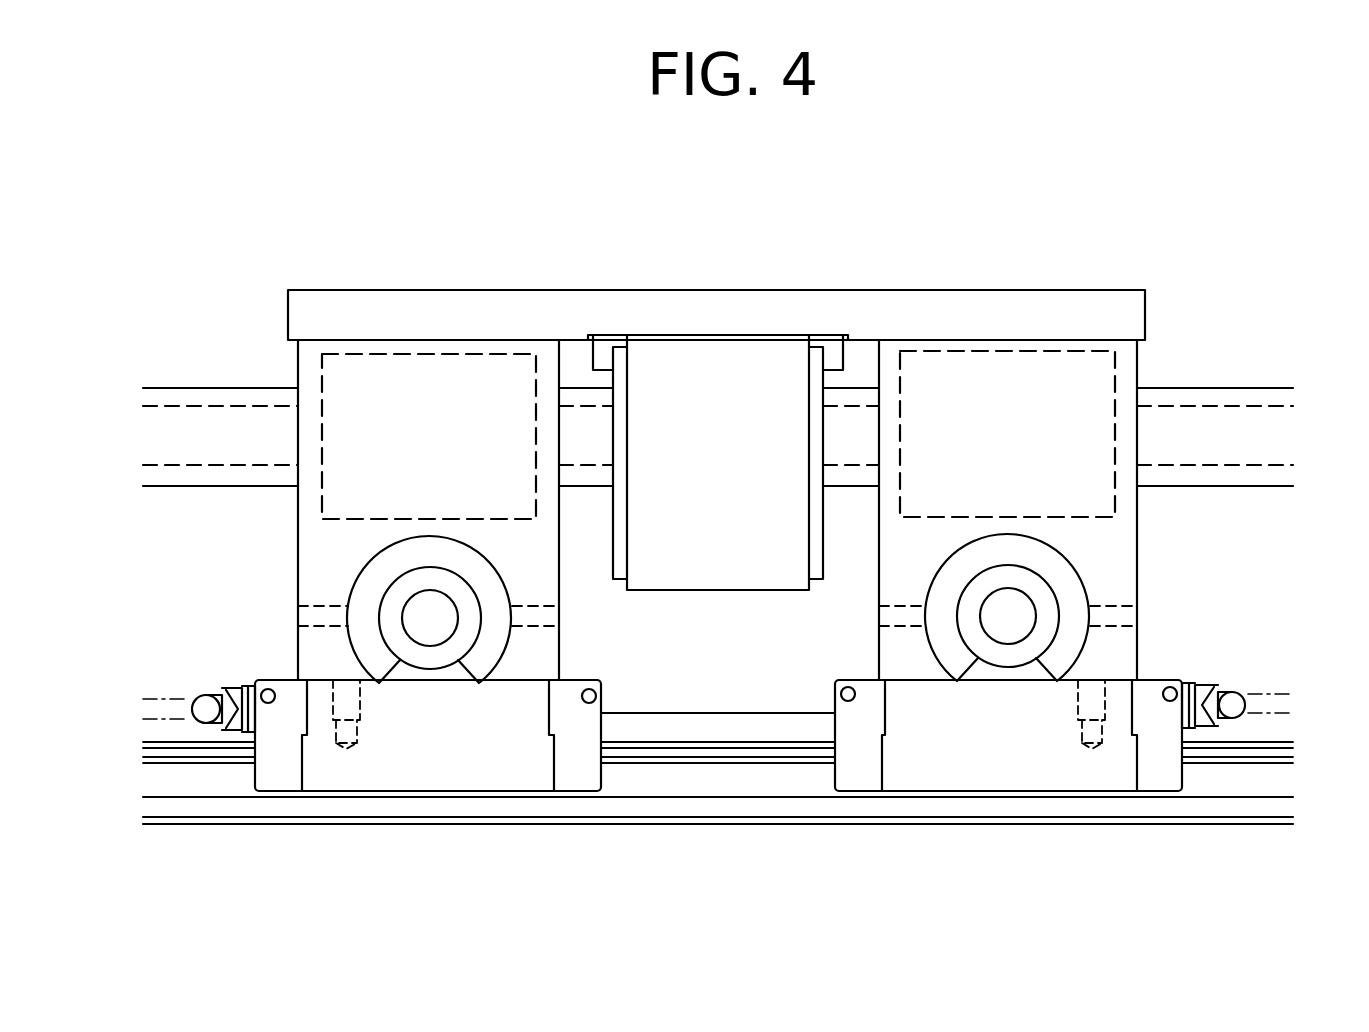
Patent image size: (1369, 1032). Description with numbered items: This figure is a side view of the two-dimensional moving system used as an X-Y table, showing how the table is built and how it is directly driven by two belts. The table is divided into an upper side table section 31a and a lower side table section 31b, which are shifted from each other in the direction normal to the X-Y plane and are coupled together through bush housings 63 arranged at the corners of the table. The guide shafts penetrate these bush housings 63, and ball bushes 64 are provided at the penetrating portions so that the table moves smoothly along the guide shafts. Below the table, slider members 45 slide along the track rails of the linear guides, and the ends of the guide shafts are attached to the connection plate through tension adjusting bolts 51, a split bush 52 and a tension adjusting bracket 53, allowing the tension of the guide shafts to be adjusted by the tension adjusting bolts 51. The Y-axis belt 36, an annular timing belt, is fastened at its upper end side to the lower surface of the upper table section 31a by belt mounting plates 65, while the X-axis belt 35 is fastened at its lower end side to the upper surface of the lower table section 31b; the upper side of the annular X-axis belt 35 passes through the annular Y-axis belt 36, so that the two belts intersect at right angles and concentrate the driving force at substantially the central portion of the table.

The upper side table section 31a is at (1102, 308).
The lower side table section 31b is at (709, 725).
The X-axis belt 35 is at (1280, 697).
The Y-axis belt 36 is at (718, 347).
The slider member 45 is at (432, 763).
The tension adjusting bolt 51 is at (1020, 653).
The split bush 52 is at (1042, 562).
The tension adjusting bracket 53 is at (1117, 540).
The bush housing 63 is at (310, 552).
The ball bush 64 is at (398, 378).
The belt mounting plate 65 is at (600, 345).